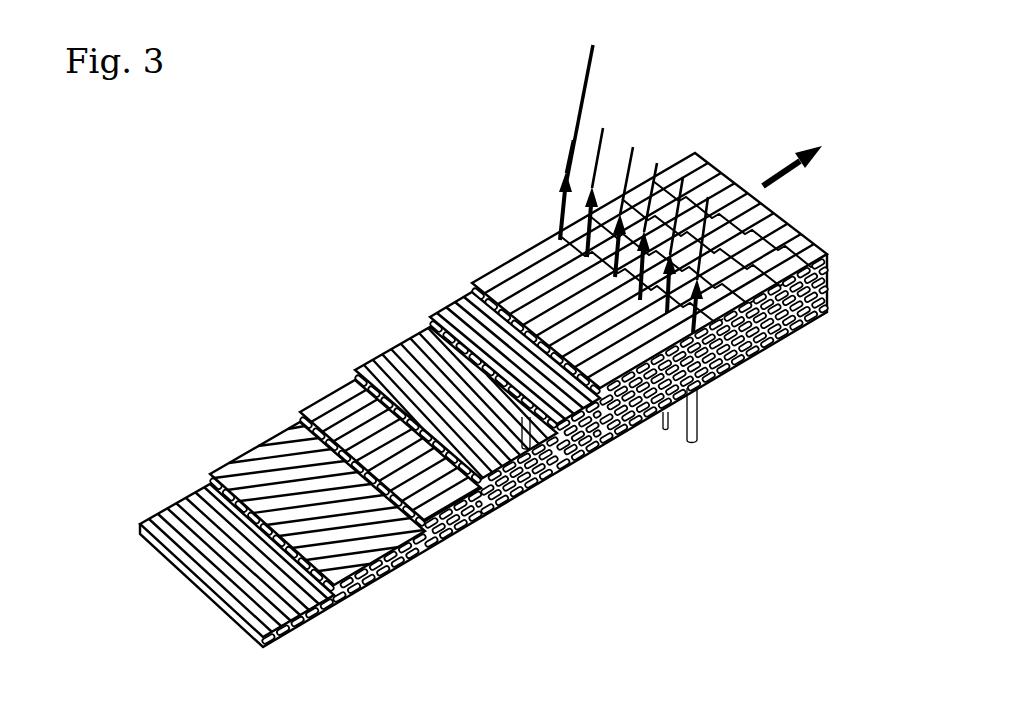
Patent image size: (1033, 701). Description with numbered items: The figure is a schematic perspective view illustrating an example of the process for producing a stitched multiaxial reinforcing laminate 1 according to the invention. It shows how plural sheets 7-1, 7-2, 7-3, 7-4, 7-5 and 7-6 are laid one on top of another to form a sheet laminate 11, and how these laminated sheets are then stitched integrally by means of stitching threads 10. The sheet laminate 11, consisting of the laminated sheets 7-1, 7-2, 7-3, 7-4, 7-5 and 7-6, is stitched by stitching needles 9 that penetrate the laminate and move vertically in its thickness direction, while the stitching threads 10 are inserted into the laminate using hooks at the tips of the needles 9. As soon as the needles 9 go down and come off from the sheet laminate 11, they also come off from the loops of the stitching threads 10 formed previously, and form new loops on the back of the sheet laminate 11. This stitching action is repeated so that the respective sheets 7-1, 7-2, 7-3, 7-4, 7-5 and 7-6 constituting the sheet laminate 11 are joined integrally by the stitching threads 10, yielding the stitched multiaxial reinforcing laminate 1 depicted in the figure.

The fiber preform 1 is at (735, 377).
The sheet 7-1 is at (167, 525).
The sheet 7-2 is at (257, 458).
The sheet 7-3 is at (335, 413).
The sheet 7-4 is at (382, 372).
The sheet 7-5 is at (450, 317).
The sheet 7-6 is at (518, 268).
The stitching needle 9 is at (697, 420).
The stitching thread 10 is at (588, 93).
The sheet laminate 11 is at (555, 482).